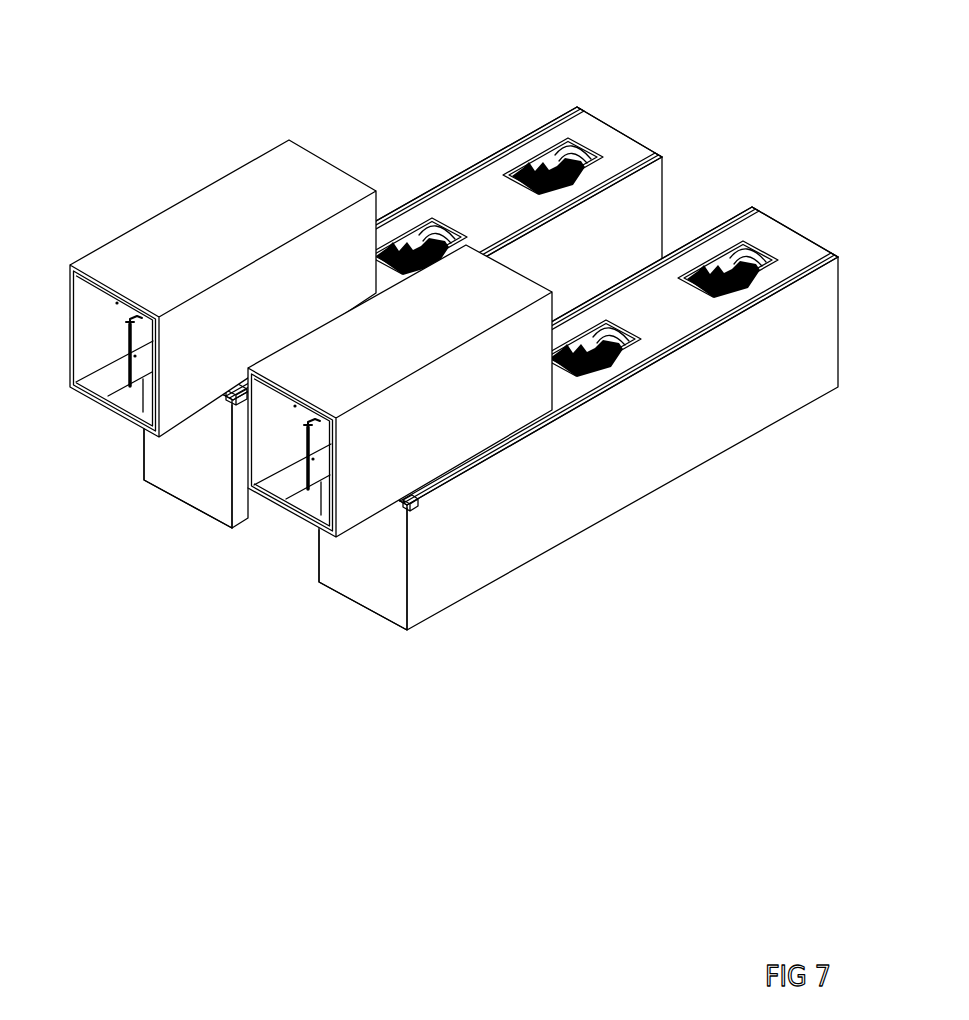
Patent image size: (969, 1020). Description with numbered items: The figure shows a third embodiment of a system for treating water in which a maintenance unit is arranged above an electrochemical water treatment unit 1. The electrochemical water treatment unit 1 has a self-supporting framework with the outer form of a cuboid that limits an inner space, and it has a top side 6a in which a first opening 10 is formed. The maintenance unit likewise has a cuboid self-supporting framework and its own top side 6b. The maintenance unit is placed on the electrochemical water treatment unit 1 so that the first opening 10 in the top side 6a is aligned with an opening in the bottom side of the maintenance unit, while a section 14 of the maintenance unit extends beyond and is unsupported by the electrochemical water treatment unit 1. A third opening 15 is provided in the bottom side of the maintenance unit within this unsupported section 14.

The electrochemical water treatment unit 1 is at (643, 132).
The top side 6a is at (608, 140).
The top side 6b is at (215, 217).
The first opening 10 is at (545, 163).
The section 14 is at (112, 462).
The third opening 15 is at (310, 507).